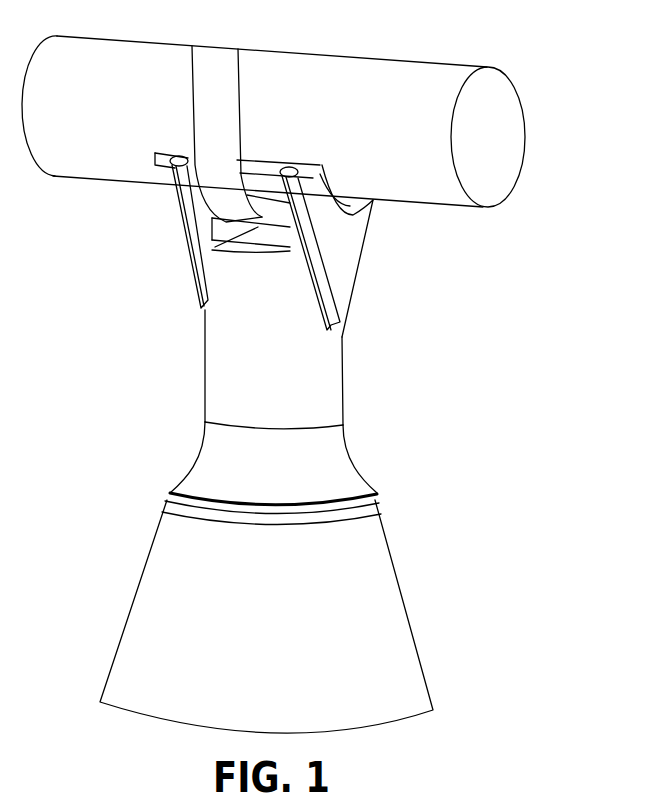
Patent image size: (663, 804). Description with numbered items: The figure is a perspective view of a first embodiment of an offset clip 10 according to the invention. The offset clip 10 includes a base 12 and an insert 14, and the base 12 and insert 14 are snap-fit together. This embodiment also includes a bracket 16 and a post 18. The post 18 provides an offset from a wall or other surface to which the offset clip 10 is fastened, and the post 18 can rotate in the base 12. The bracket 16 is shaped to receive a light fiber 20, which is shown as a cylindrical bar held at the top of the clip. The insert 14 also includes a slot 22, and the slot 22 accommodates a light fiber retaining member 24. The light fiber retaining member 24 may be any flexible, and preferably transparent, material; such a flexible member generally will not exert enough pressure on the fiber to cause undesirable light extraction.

The offset clip 10 is at (497, 306).
The base 12 is at (390, 625).
The insert 14 is at (332, 410).
The bracket 16 is at (182, 200).
The post 18 is at (237, 343).
The light fiber 20 is at (104, 54).
The slot 22 is at (255, 228).
The light fiber retaining member 24 is at (245, 57).